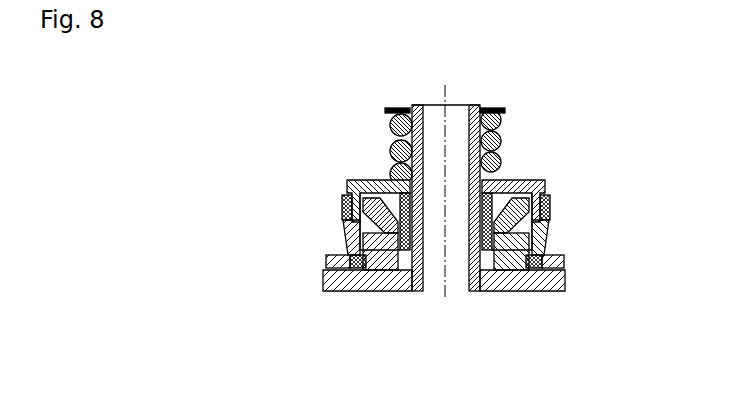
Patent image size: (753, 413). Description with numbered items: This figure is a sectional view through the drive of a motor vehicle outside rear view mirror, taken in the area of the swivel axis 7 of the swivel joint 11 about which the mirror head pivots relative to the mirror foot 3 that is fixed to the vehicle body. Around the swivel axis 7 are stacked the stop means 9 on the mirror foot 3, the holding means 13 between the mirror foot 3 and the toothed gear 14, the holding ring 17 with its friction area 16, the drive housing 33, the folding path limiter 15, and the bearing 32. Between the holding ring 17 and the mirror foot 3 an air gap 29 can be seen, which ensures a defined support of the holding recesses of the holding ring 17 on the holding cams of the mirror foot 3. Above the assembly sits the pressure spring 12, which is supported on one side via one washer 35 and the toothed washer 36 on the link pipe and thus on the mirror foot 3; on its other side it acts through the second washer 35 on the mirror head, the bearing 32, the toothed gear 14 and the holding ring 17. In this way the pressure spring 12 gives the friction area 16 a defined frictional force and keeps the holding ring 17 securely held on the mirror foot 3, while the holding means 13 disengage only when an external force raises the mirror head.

The mirror foot 3 is at (358, 290).
The swivel axis 7 is at (443, 98).
The stop means 9 is at (328, 268).
The swivel joint 11 is at (413, 288).
The pressure spring 12 is at (520, 113).
The holding means 13 is at (382, 290).
The toothed gear 14 is at (543, 190).
The folding path limiter 15 is at (485, 265).
The friction area 16 is at (340, 226).
The holding ring 17 is at (497, 268).
The air gap 29 is at (400, 290).
The bearing 32 is at (385, 178).
The drive housing 33 is at (545, 253).
The washers 35 is at (383, 112).
The toothed washer 36 is at (497, 107).